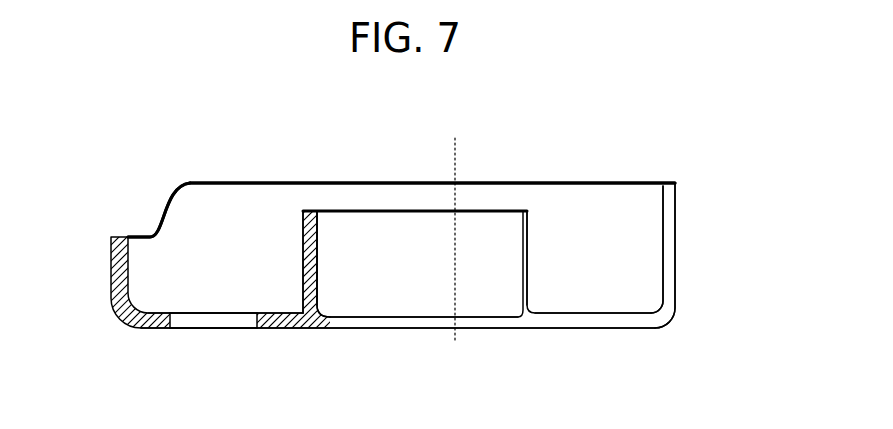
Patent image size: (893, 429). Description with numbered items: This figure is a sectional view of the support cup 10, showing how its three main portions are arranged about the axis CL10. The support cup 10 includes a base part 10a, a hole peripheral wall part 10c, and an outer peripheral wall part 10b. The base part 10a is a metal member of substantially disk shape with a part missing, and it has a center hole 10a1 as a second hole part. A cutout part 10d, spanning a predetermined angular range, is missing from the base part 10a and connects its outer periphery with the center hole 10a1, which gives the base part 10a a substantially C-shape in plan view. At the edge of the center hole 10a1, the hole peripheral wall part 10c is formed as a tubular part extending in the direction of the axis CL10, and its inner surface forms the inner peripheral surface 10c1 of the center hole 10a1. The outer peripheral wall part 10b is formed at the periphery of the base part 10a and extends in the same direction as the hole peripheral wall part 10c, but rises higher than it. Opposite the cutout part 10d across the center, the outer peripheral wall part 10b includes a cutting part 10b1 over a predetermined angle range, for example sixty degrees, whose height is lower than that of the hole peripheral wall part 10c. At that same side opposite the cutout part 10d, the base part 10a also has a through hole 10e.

The support cup 10 is at (160, 328).
The base part 10a is at (553, 313).
The center hole 10a1 is at (317, 270).
The outer peripheral wall part 10b is at (240, 183).
The cutting part 10b1 is at (163, 213).
The hole peripheral wall part 10c is at (528, 242).
The inner peripheral surface 10c1 is at (318, 240).
The cutout part 10d is at (675, 247).
The through hole 10e is at (240, 323).
The axis CL10 is at (455, 158).